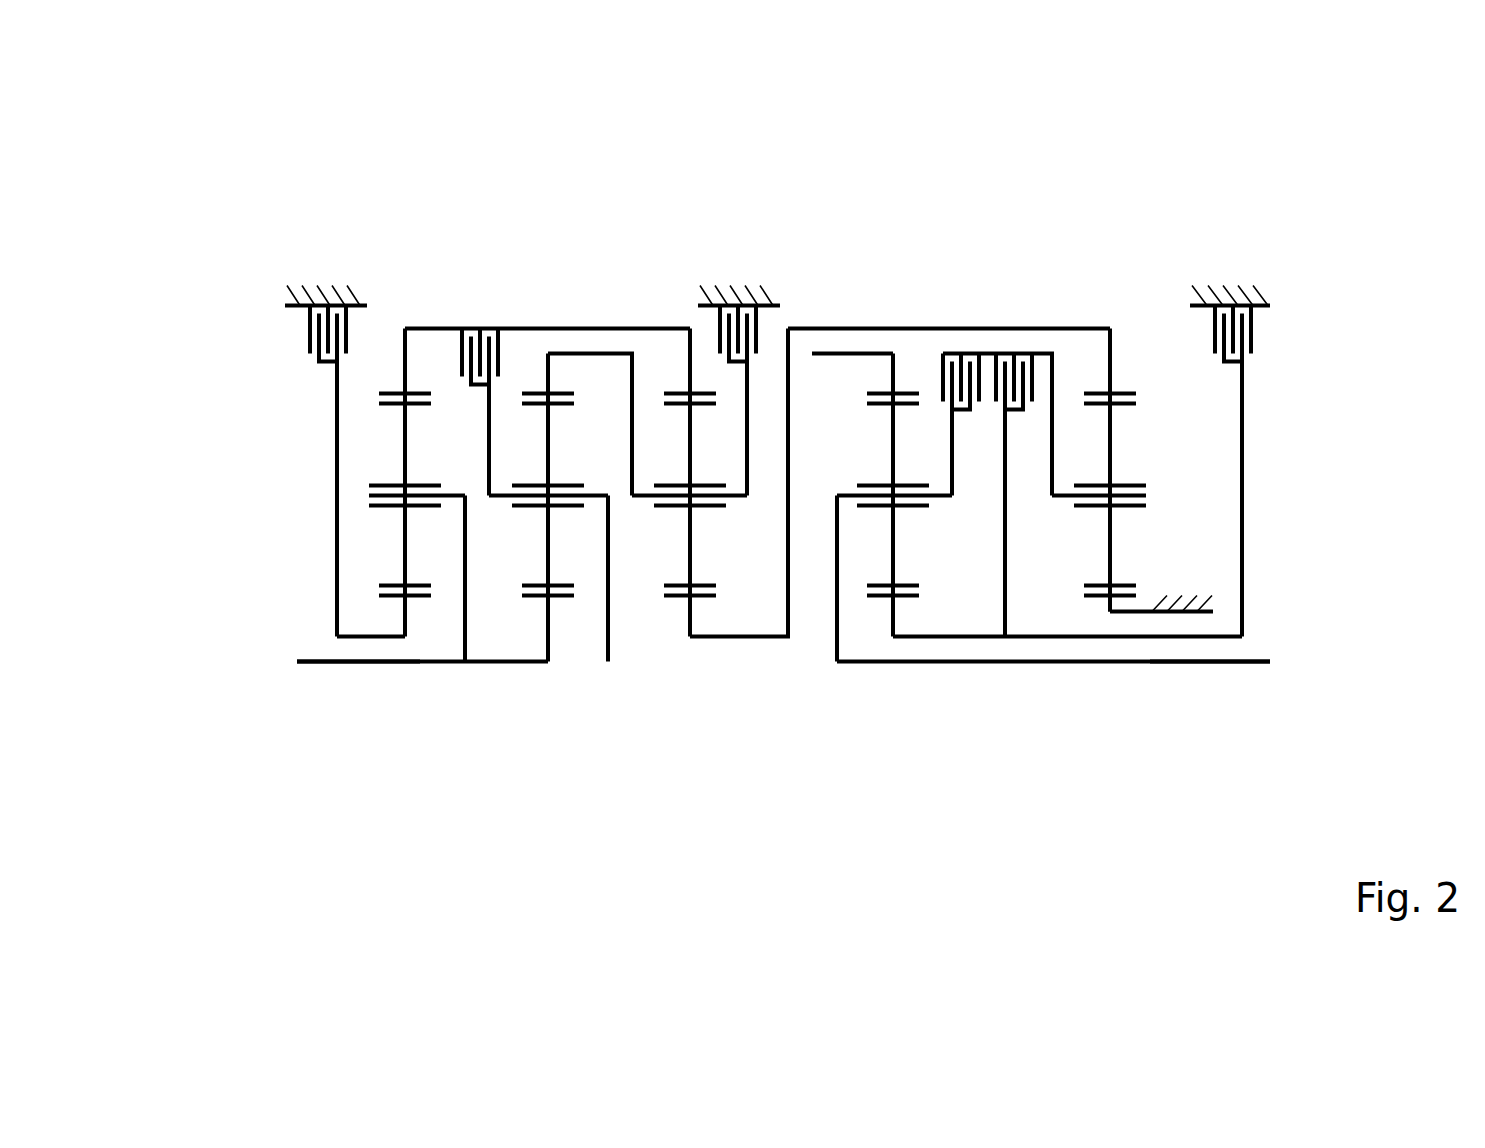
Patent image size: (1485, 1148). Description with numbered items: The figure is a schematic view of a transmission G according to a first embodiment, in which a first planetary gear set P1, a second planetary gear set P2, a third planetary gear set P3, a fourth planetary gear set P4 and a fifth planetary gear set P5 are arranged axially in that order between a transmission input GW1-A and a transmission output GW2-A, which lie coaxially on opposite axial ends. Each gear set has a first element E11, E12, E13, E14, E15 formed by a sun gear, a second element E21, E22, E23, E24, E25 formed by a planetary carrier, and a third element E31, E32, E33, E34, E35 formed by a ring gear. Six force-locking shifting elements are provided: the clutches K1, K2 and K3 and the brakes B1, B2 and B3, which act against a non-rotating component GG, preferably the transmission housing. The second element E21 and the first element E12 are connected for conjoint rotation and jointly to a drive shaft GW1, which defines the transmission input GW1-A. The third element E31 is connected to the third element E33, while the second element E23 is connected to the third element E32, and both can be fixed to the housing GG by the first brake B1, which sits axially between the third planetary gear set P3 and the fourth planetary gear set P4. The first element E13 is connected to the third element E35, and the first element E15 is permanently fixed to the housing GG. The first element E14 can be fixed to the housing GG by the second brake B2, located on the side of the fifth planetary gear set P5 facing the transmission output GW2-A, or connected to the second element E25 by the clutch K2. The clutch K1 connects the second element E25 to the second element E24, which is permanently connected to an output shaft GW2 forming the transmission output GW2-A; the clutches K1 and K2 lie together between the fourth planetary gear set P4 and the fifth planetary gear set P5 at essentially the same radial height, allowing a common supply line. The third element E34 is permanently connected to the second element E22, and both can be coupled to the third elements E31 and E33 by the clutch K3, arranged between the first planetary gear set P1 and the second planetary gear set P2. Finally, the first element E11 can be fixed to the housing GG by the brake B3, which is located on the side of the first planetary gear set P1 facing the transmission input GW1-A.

The transmission G is at (270, 206).
The non-rotating component GG is at (322, 304).
The first shifting element B1 is at (768, 326).
The second shifting element B2 is at (1203, 329).
The sixth shifting element B3 is at (299, 336).
The third shifting element K1 is at (960, 347).
The fourth shifting element K2 is at (1014, 347).
The fifth shifting element K3 is at (470, 315).
The first planetary gear set P1 is at (308, 492).
The second planetary gear set P2 is at (559, 492).
The third planetary gear set P3 is at (720, 492).
The fourth planetary gear set P4 is at (933, 492).
The fifth planetary gear set P5 is at (1223, 492).
The first element of the first planetary gear set E11 is at (407, 618).
The first element of the second planetary gear set E12 is at (548, 628).
The first element of the third planetary gear set E13 is at (693, 618).
The first element of the fourth planetary gear set E14 is at (895, 620).
The first element of the fifth planetary gear set E15 is at (1112, 613).
The second element of the first planetary gear set E21 is at (370, 495).
The second element of the second planetary gear set E22 is at (598, 500).
The second element of the third planetary gear set E23 is at (737, 500).
The second element of the fourth planetary gear set E24 is at (945, 500).
The second element of the fifth planetary gear set E25 is at (1147, 497).
The third element of the first planetary gear set E31 is at (405, 347).
The third element of the second planetary gear set E32 is at (547, 355).
The third element of the third planetary gear set E33 is at (690, 362).
The third element of the fourth planetary gear set E34 is at (892, 378).
The third element of the fifth planetary gear set E35 is at (1110, 363).
The drive shaft GW1 is at (327, 667).
The transmission input GW1-A is at (288, 662).
The output shaft GW2 is at (1248, 661).
The transmission output GW2-A is at (1279, 664).